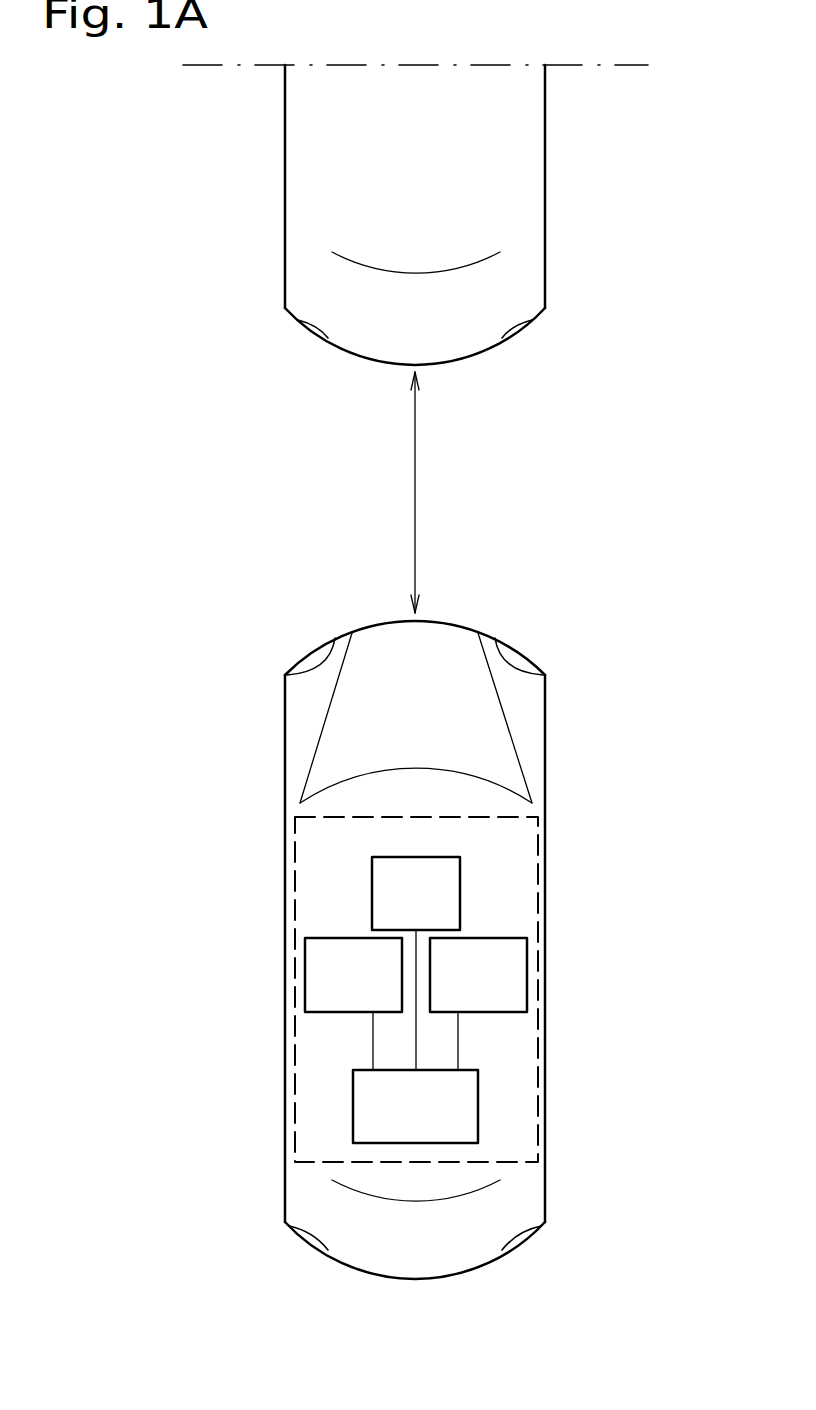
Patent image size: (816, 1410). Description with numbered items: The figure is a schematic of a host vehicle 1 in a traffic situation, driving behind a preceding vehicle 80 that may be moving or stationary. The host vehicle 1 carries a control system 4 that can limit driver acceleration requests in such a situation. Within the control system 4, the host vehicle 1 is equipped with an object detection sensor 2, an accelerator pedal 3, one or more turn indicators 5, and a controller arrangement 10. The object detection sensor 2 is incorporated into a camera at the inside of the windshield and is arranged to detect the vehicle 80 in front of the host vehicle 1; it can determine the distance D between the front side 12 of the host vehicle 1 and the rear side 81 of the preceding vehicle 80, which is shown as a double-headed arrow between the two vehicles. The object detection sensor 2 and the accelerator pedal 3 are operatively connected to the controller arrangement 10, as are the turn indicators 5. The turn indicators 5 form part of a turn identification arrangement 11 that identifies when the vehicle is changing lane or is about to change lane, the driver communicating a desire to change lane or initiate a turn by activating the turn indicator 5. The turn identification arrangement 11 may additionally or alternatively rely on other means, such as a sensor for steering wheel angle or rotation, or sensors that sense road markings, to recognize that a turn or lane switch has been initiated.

The preceding vehicle 80 is at (530, 267).
The rear side of preceding vehicle 81 is at (468, 357).
The distance D is at (415, 500).
The front side of host vehicle 12 is at (450, 622).
The host vehicle 1 is at (530, 742).
The control system 4 is at (528, 845).
The object detection sensor 2 is at (457, 908).
The turn indicator 5 is at (518, 953).
The accelerator pedal 3 is at (310, 993).
The controller arrangement 10 is at (365, 1090).
The turn identification arrangement 11 is at (500, 1044).